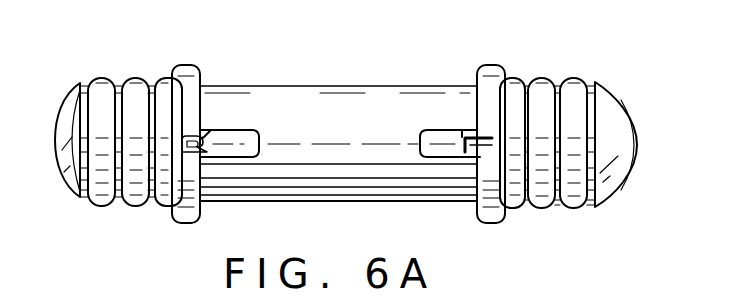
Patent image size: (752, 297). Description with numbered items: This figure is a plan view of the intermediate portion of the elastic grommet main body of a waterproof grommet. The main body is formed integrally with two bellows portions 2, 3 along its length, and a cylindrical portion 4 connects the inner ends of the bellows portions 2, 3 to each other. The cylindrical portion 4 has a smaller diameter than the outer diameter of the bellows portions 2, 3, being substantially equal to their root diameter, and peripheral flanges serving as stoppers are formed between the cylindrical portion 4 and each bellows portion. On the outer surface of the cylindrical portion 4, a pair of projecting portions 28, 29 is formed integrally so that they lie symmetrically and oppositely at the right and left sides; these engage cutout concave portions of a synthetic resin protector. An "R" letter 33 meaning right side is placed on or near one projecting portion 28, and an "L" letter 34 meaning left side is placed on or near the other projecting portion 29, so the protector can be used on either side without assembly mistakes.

The bellows portion 2 is at (133, 203).
The bellows portion 3 is at (540, 208).
The cylindrical portion 4 is at (252, 188).
The projecting portion 28 is at (257, 130).
The projecting portion 29 is at (420, 140).
The "R" letter 33 is at (196, 130).
The "L" letter 34 is at (463, 134).